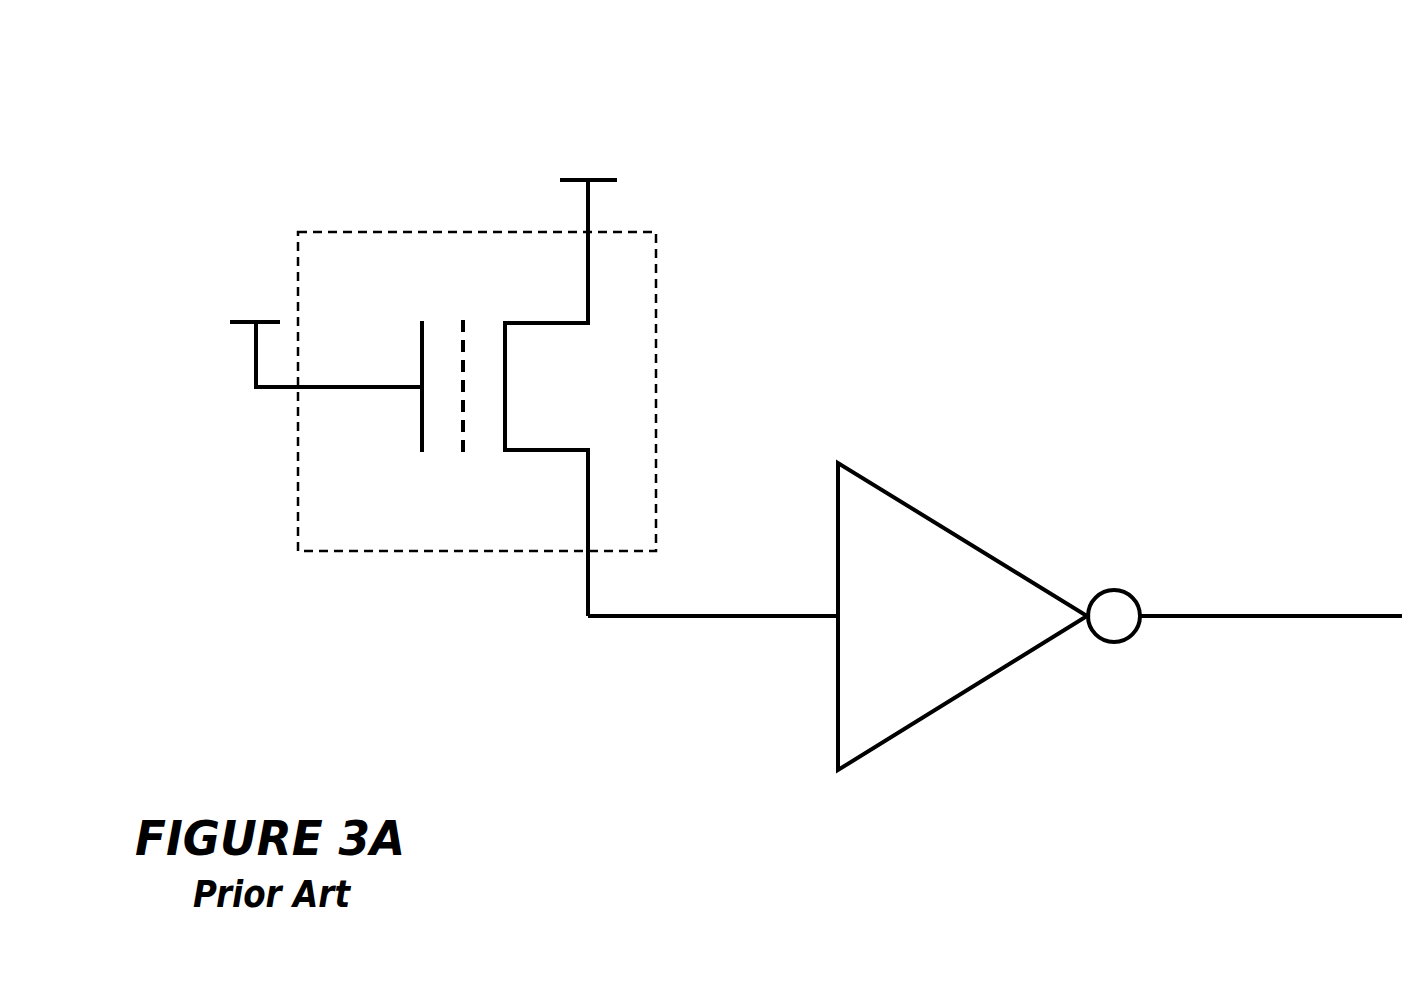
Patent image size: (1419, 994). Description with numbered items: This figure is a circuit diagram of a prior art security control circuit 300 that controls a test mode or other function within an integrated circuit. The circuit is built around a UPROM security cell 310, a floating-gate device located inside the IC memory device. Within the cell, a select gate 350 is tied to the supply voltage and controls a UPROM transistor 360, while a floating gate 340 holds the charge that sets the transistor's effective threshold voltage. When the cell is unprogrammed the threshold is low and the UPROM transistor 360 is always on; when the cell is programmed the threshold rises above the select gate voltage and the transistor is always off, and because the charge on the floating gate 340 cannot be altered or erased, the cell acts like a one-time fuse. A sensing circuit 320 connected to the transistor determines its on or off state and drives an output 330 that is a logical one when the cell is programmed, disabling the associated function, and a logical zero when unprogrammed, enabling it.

The security control circuit 300 is at (1180, 176).
The UPROM security cell 310 is at (452, 398).
The sensing circuit 320 is at (864, 616).
The output 330 is at (1271, 665).
The floating gate 340 is at (461, 470).
The select gate 350 is at (301, 377).
The UPROM transistor 360 is at (515, 290).